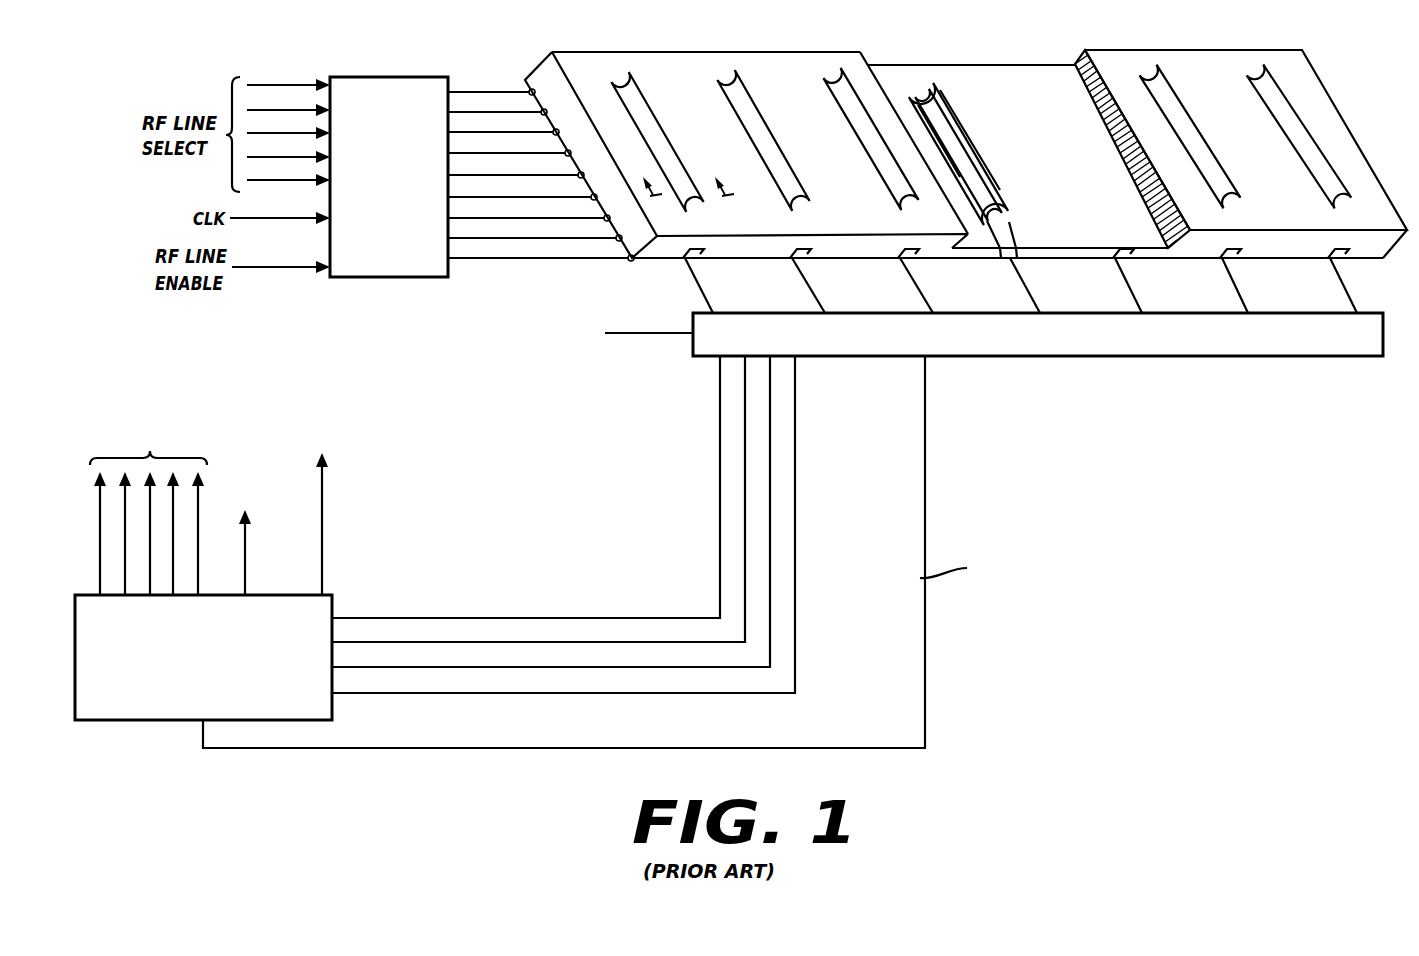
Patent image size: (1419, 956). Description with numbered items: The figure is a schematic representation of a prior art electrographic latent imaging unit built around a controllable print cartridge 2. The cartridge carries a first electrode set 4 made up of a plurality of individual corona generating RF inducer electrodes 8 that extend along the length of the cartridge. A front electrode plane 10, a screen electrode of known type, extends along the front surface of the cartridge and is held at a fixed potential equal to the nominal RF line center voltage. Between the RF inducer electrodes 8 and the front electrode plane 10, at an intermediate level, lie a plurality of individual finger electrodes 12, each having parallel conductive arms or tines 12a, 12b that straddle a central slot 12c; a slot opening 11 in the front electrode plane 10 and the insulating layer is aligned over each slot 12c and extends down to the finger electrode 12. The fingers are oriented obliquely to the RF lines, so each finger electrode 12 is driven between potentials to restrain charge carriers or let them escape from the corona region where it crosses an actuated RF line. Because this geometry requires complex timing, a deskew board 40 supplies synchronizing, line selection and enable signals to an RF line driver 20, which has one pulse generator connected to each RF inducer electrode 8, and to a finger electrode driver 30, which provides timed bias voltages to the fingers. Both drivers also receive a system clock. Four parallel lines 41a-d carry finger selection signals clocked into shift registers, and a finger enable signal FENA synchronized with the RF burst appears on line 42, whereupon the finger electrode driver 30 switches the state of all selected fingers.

The print cartridge 2 is at (1248, 26).
The first electrode set 4 is at (556, 271).
The RF inducer electrodes 8 is at (529, 90).
The front electrode plane 10 is at (747, 52).
The slot opening 11 is at (1165, 85).
The finger electrodes 12 is at (1005, 136).
The conductive arm 12a is at (1042, 143).
The conductive arm 12b is at (1052, 83).
The central slot 12c is at (1033, 88).
The RF line driver 20 is at (376, 88).
The finger electrode driver 30 is at (1372, 312).
The deskew board 40 is at (298, 647).
The parallel lines 41a-d is at (519, 600).
The finger enable line 42 is at (905, 748).